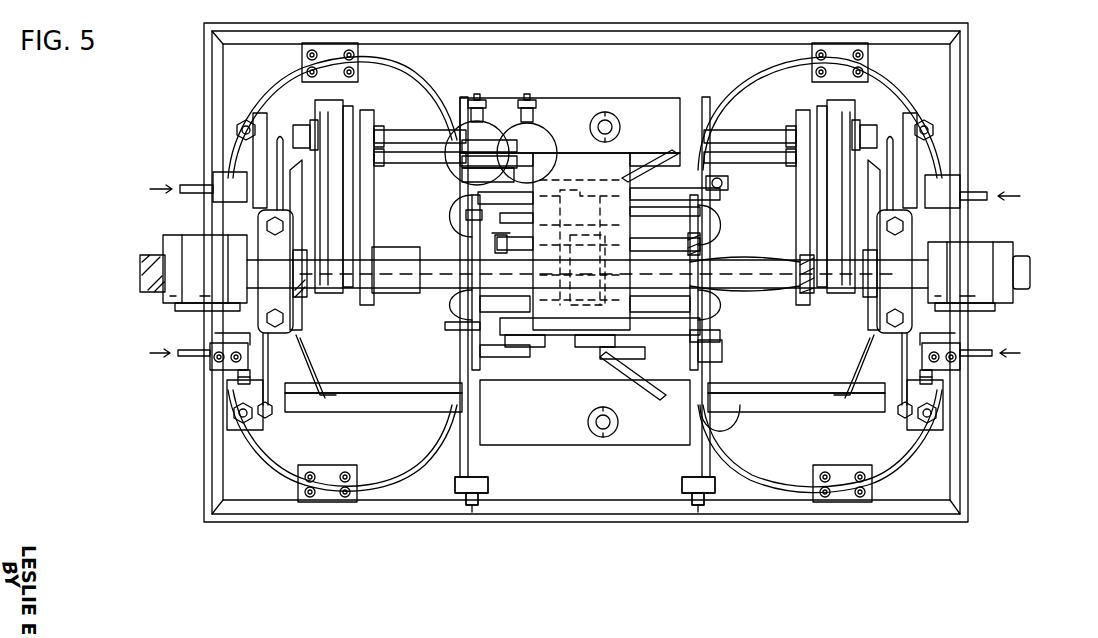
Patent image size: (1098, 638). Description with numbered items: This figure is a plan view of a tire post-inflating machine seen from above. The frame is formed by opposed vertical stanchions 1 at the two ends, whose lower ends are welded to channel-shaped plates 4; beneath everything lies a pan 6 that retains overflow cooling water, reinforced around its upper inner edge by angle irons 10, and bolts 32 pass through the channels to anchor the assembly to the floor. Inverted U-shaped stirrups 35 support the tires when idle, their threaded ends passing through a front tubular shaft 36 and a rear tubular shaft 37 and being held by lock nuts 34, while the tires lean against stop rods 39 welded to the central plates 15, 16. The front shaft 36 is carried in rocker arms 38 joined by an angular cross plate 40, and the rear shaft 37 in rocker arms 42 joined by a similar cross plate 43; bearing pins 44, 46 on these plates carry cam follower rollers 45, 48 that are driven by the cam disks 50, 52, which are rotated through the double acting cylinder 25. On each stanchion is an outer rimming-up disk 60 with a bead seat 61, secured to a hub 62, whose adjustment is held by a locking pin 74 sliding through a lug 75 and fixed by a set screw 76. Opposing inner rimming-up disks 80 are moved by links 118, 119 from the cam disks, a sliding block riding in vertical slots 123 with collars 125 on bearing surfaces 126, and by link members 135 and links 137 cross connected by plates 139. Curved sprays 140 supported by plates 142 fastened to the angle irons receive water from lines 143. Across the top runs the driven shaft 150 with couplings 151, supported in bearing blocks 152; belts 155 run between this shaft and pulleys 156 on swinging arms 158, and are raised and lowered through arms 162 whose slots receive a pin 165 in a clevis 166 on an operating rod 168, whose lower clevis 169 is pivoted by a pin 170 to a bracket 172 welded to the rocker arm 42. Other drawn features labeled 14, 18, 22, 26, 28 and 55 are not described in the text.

The vertical stanchion 1 is at (218, 220).
The channel-shaped plate 4 is at (245, 395).
The pan 6 is at (965, 400).
The angle iron 10 is at (960, 466).
The vertical plate 14 is at (470, 198).
The stanchion (plate) 15 is at (523, 347).
The stanchion (plate) 16 is at (475, 215).
The lower block 18 is at (595, 347).
The central housing 22 is at (575, 155).
The cylinder 25 is at (502, 155).
The disc 26 is at (482, 150).
The disc 28 is at (460, 130).
The bolt 32 is at (240, 420).
The lock nut 34 is at (267, 418).
The stirrup 35 is at (403, 165).
The front tubular shaft 36 is at (390, 412).
The rear tubular shaft 37 is at (403, 133).
The rocker arm 38 is at (455, 450).
The stop rod 39 is at (465, 236).
The angular cross plate 40 is at (655, 98).
The rocker arm 42 is at (736, 150).
The angular cross plate 43 is at (640, 435).
The bearing pin 44 is at (613, 125).
The cam follower roller 45 is at (615, 116).
The bearing pin 46 is at (596, 425).
The cam follower roller 48 is at (606, 430).
The rear cam disk 50 is at (728, 183).
The cam disk 52 is at (611, 368).
The gusset plate 55 is at (655, 402).
The outer rimming-up disk 60 is at (293, 340).
The bead seat 61 is at (323, 398).
The hub 62 is at (306, 312).
The locking pin 74 is at (227, 333).
The lug 75 is at (248, 360).
The set screw 76 is at (238, 376).
The inner rimming-up disk 80 is at (465, 318).
The upwardly extending link 118 is at (708, 232).
The downwardly extending link 119 is at (515, 178).
The vertical slot 123 is at (568, 318).
The collar 125 is at (560, 336).
The bearing surface 126 is at (612, 352).
The link member 135 is at (478, 298).
The link 137 is at (690, 285).
The plate 139 is at (495, 255).
The spray 140 is at (240, 100).
The plate 142 is at (302, 62).
The water line 143 is at (190, 186).
The shaft 150 is at (812, 294).
The coupling 151 is at (175, 250).
The bearing block 152 is at (258, 308).
The belt 155 is at (343, 108).
The pulley 156 is at (308, 105).
The swinging arm 158 is at (375, 218).
The arm 162 is at (445, 330).
The pin 165 is at (722, 355).
The clevis 166 is at (736, 425).
The operating rod 168 is at (472, 495).
The clevis 169 is at (460, 505).
The pin 170 is at (700, 505).
The bracket 172 is at (468, 505).